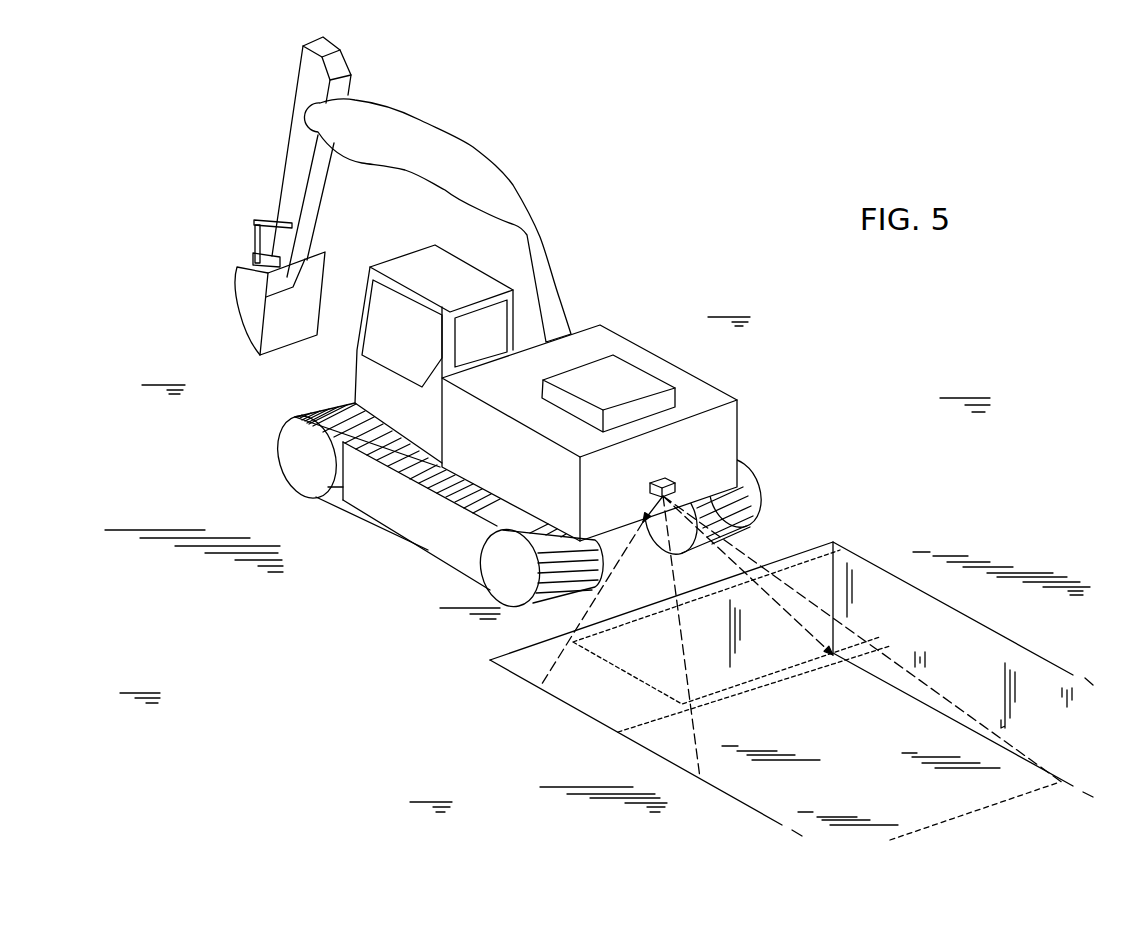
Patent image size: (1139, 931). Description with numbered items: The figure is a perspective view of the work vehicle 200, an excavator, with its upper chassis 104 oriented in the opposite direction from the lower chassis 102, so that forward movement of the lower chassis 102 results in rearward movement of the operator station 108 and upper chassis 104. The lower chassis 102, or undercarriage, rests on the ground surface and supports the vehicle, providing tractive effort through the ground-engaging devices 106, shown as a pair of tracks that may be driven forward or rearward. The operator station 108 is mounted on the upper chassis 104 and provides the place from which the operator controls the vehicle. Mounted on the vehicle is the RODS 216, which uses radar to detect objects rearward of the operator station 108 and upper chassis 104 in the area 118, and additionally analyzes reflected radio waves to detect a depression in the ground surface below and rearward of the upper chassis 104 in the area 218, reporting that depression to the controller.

The lower chassis 102 is at (281, 411).
The upper chassis 104 is at (766, 411).
The ground-engaging devices 106 is at (335, 410).
The operator station 108 is at (447, 275).
The area 118 is at (640, 664).
The work vehicle 200 is at (582, 261).
The RODS 216 is at (668, 482).
The area 218 is at (920, 789).